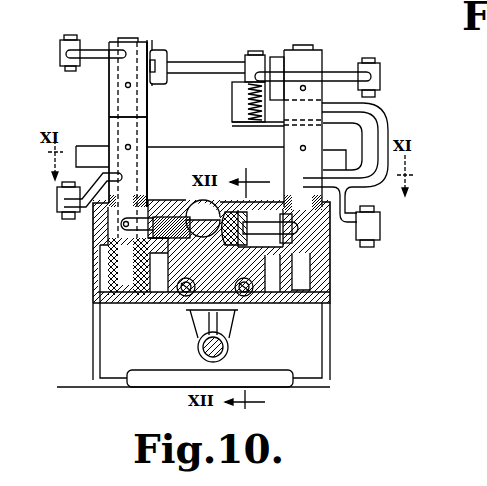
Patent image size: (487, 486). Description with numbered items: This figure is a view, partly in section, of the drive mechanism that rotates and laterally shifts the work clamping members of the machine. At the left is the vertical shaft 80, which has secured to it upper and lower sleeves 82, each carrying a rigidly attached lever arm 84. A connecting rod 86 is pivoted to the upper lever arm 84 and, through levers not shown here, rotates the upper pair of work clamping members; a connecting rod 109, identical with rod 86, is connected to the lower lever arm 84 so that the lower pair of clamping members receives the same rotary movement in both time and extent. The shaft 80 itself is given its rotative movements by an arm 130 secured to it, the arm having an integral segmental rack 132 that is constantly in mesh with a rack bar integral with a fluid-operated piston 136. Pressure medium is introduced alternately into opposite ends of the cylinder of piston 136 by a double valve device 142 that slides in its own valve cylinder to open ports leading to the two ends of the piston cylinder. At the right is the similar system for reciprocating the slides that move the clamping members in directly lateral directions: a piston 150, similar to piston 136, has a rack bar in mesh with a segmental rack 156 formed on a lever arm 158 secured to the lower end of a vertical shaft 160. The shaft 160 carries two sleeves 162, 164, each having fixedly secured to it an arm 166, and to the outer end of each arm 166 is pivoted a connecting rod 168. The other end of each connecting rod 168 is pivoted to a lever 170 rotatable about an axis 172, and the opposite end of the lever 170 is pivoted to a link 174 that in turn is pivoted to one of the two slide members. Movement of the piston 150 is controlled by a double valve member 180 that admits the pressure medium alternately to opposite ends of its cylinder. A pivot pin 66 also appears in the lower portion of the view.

The pivot pin 66 is at (223, 352).
The shaft 80 is at (132, 40).
The sleeves 82 is at (109, 128).
The lever arm 84 is at (93, 52).
The connecting rod 86 is at (63, 36).
The connecting rod 109 is at (58, 188).
The arm 130 is at (128, 242).
The segmental rack 132 is at (175, 210).
The piston 136 is at (193, 210).
The double valve device 142 is at (183, 300).
The piston 150 is at (248, 206).
The segmental rack 156 is at (331, 253).
The lever arm 158 is at (298, 221).
The vertical shaft 160 is at (308, 45).
The sleeve 162 is at (320, 143).
The sleeve 164 is at (313, 90).
The arm 166 is at (340, 72).
The connecting rod 168 is at (380, 62).
The lever 170 is at (208, 64).
The axis 172 is at (255, 50).
The link 174 is at (149, 52).
The double valve member 180 is at (248, 303).